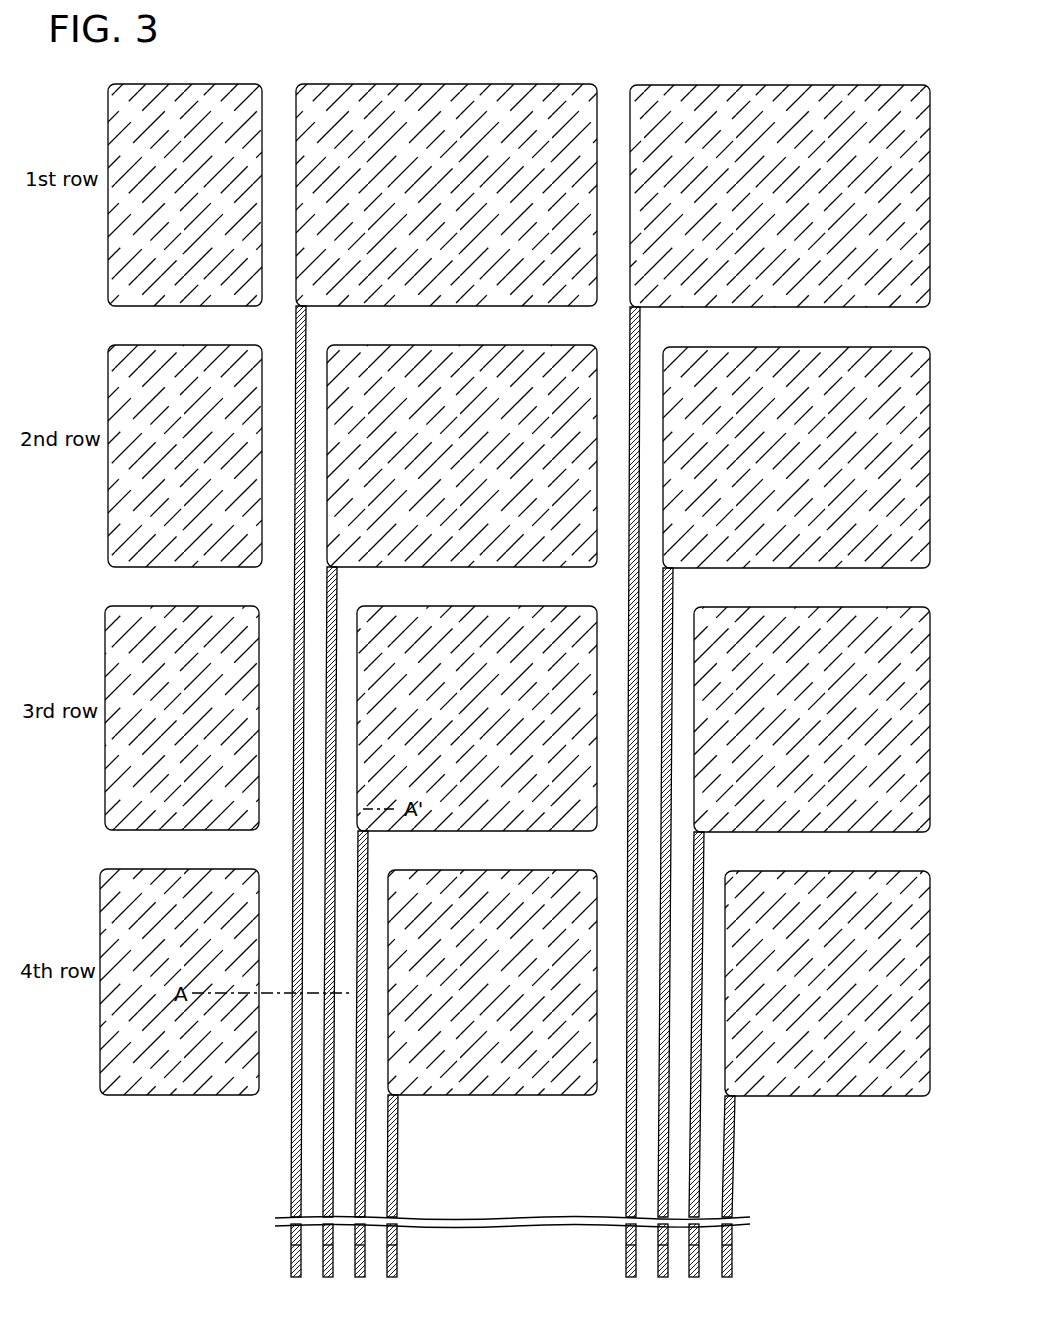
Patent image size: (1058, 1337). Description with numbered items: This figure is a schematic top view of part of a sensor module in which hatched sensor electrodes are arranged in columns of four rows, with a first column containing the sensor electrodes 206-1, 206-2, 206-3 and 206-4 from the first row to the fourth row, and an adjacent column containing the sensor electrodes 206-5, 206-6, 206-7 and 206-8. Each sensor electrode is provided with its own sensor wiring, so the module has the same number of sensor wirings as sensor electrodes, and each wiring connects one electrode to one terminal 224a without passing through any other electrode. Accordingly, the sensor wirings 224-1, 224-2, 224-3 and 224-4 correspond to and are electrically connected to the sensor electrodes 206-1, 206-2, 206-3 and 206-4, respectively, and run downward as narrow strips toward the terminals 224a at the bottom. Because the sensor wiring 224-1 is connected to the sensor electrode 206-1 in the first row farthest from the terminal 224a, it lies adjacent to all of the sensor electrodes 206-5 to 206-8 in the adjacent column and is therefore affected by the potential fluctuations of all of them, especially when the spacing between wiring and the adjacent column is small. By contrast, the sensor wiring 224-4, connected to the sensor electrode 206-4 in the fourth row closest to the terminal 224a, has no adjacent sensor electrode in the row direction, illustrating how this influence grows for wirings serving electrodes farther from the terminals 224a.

The sensor electrode 206-1 is at (446, 195).
The sensor electrode 206-2 is at (462, 456).
The sensor electrode 206-3 is at (477, 718).
The sensor electrode 206-4 is at (492, 982).
The sensor electrode 206-5 is at (185, 195).
The sensor electrode 206-6 is at (185, 456).
The sensor electrode 206-7 is at (182, 718).
The sensor electrode 206-8 is at (179, 982).
The sensor wiring 224-1 is at (297, 315).
The sensor wiring 224-2 is at (327, 575).
The sensor wiring 224-3 is at (368, 1134).
The sensor wiring 224-4 is at (398, 1177).
The terminal 224a is at (398, 1254).